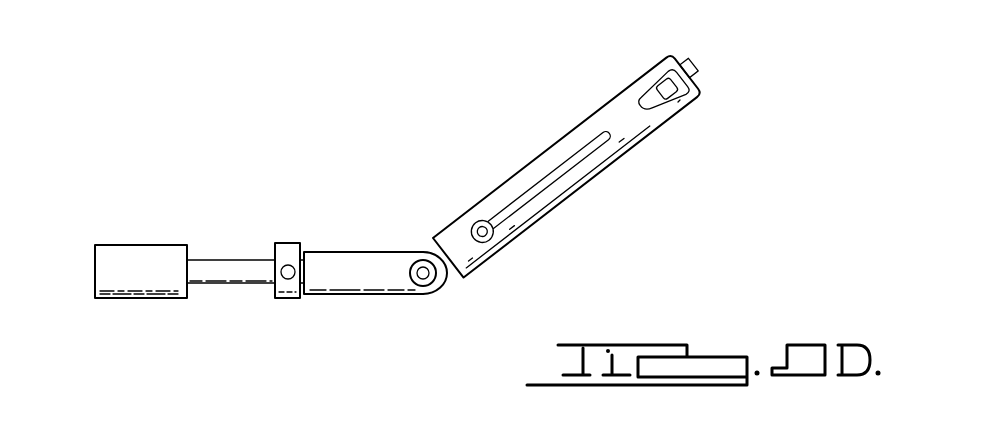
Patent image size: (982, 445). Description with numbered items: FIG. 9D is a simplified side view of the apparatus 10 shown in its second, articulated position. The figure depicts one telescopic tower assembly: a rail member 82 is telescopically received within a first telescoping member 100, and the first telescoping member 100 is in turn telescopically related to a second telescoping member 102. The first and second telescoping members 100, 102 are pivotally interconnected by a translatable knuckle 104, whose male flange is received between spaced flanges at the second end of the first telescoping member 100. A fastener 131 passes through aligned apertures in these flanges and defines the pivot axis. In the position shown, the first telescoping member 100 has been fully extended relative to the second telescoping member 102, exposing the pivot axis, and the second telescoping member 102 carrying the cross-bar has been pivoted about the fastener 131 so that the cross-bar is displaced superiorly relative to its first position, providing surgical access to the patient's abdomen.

The apparatus 10 is at (142, 125).
The rail member 82 is at (128, 243).
The first telescoping member 100 is at (315, 248).
The second telescoping member 102 is at (558, 208).
The translatable knuckle 104 is at (455, 281).
The fastener 131 is at (423, 285).